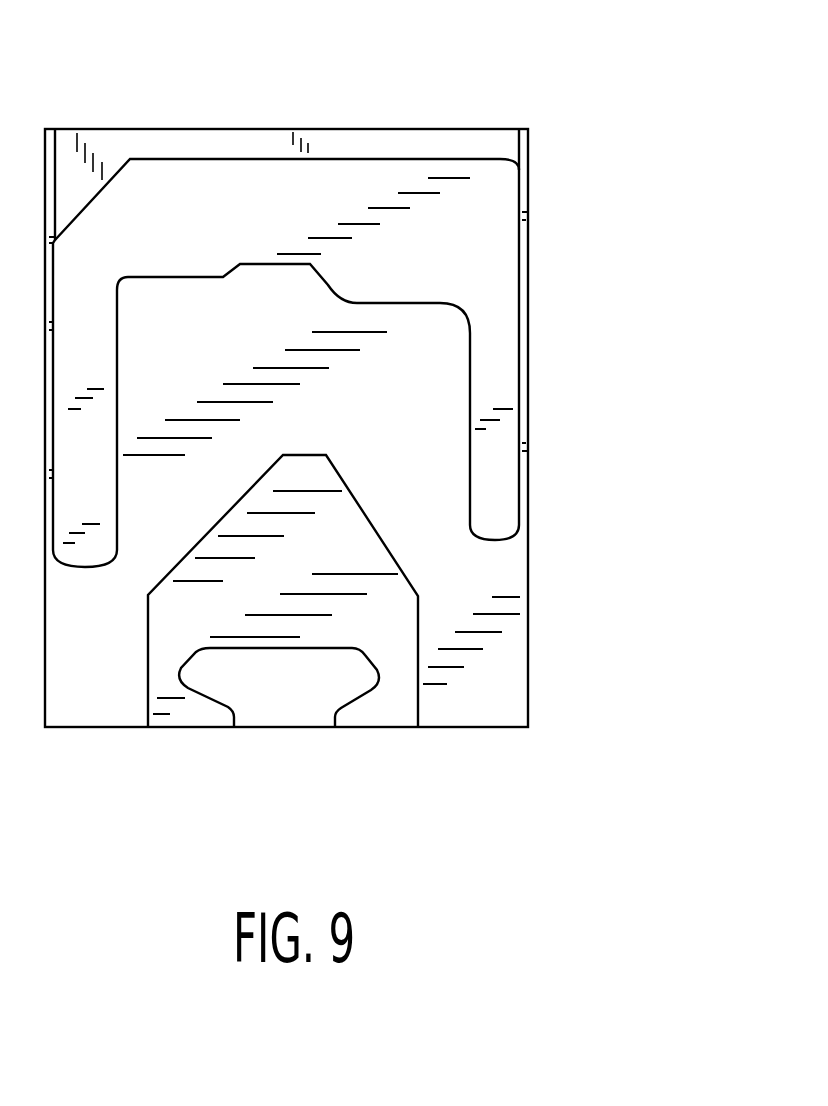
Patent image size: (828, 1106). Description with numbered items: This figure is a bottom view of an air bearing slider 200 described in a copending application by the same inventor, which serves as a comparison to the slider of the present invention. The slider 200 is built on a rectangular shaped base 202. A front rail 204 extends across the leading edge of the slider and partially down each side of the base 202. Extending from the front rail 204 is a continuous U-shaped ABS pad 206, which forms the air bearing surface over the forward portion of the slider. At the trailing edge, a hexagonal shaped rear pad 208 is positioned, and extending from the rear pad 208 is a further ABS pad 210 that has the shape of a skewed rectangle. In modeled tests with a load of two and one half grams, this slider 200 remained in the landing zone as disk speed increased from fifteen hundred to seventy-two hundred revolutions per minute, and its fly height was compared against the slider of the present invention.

The slider 200 is at (586, 411).
The rectangular shaped base 202 is at (530, 193).
The front rail 204 is at (161, 142).
The continuous U-shaped ABS pad 206 is at (395, 175).
The hexagonal shaped rear pad 208 is at (387, 610).
The ABS pad 210 is at (285, 727).